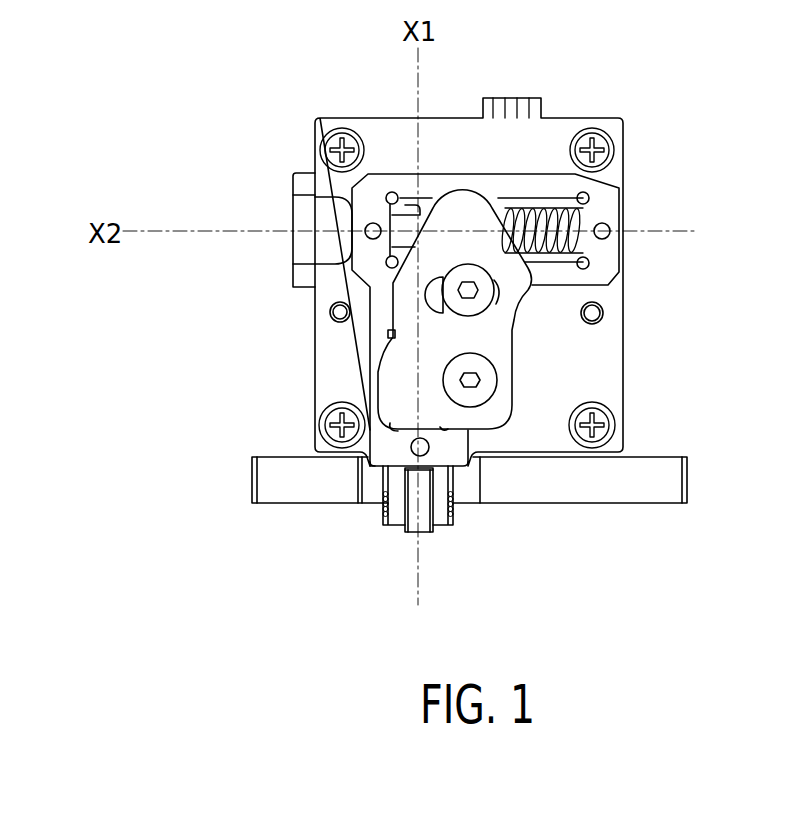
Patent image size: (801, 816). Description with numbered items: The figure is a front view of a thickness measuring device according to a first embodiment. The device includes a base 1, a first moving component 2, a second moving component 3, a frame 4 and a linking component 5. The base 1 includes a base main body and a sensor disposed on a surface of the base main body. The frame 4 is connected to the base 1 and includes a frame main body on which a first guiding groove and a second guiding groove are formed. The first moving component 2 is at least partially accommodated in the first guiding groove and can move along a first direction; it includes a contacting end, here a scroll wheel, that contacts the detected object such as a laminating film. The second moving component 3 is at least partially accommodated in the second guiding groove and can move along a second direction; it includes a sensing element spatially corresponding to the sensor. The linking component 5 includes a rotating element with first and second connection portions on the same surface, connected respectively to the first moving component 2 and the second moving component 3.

The base 1 is at (648, 482).
The first moving component 2 is at (397, 505).
The second moving component 3 is at (300, 187).
The frame 4 is at (592, 365).
The linking component 5 is at (397, 377).